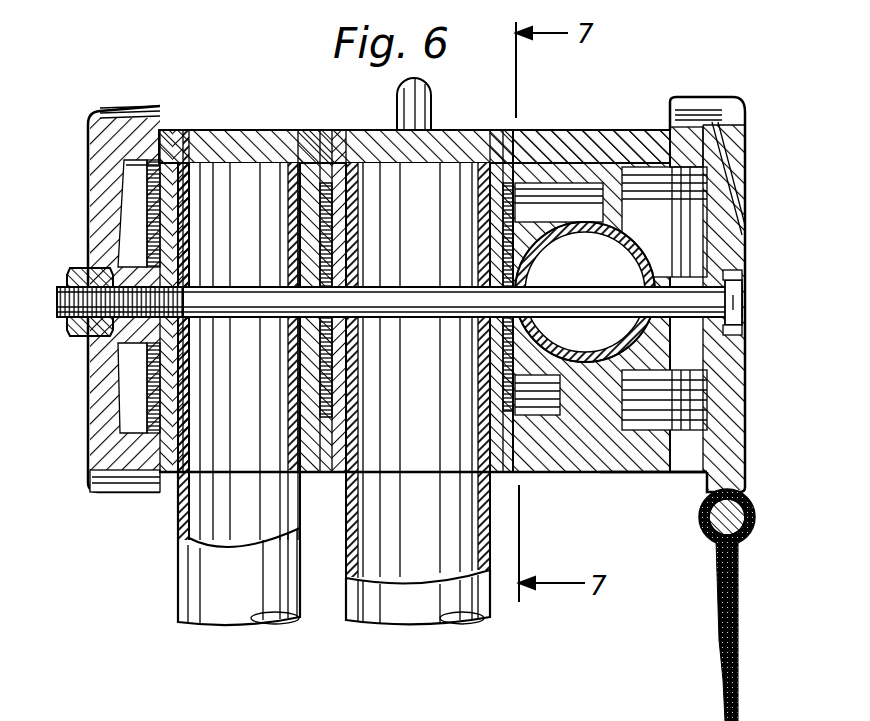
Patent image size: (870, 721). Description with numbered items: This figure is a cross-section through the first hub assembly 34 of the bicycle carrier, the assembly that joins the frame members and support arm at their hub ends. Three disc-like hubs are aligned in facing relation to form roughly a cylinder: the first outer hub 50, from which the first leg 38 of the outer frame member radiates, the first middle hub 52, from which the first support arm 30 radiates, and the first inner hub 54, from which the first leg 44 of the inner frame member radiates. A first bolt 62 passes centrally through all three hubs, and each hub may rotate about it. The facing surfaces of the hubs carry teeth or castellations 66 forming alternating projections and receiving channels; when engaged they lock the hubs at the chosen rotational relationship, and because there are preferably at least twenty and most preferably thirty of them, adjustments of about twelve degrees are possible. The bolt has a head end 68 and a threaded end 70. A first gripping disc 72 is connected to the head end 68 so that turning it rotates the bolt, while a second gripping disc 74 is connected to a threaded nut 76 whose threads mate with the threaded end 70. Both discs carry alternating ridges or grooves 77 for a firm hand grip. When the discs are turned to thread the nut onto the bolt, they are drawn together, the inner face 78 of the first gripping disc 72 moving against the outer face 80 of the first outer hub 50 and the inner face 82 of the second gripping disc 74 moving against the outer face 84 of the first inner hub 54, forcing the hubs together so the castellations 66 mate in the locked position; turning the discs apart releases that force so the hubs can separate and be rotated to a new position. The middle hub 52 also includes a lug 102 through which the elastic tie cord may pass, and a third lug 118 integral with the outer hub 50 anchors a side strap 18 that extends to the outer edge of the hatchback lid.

The side strap 18 is at (739, 688).
The first support arm 30 is at (484, 598).
The first hub assembly 34 is at (287, 114).
The first leg of outer frame member 38 is at (592, 376).
The first leg of inner frame member 44 is at (180, 584).
The first outer hub 50 is at (618, 130).
The first middle hub 52 is at (373, 130).
The first inner hub 54 is at (241, 130).
The first bolt 62 is at (215, 320).
The castellations 66 is at (327, 130).
The head end 68 is at (741, 301).
The threaded end 70 is at (58, 301).
The first gripping disc 72 is at (721, 107).
The second gripping disc 74 is at (110, 112).
The threaded nut 76 is at (84, 269).
The ridges or grooves 77 is at (136, 110).
The inner face of first gripping disc 78 is at (657, 472).
The outer face of first outer hub 80 is at (690, 113).
The inner face of second gripping disc 82 is at (163, 130).
The outer face of first inner hub 84 is at (140, 163).
The lug 102 is at (428, 92).
The third lug 118 is at (752, 511).